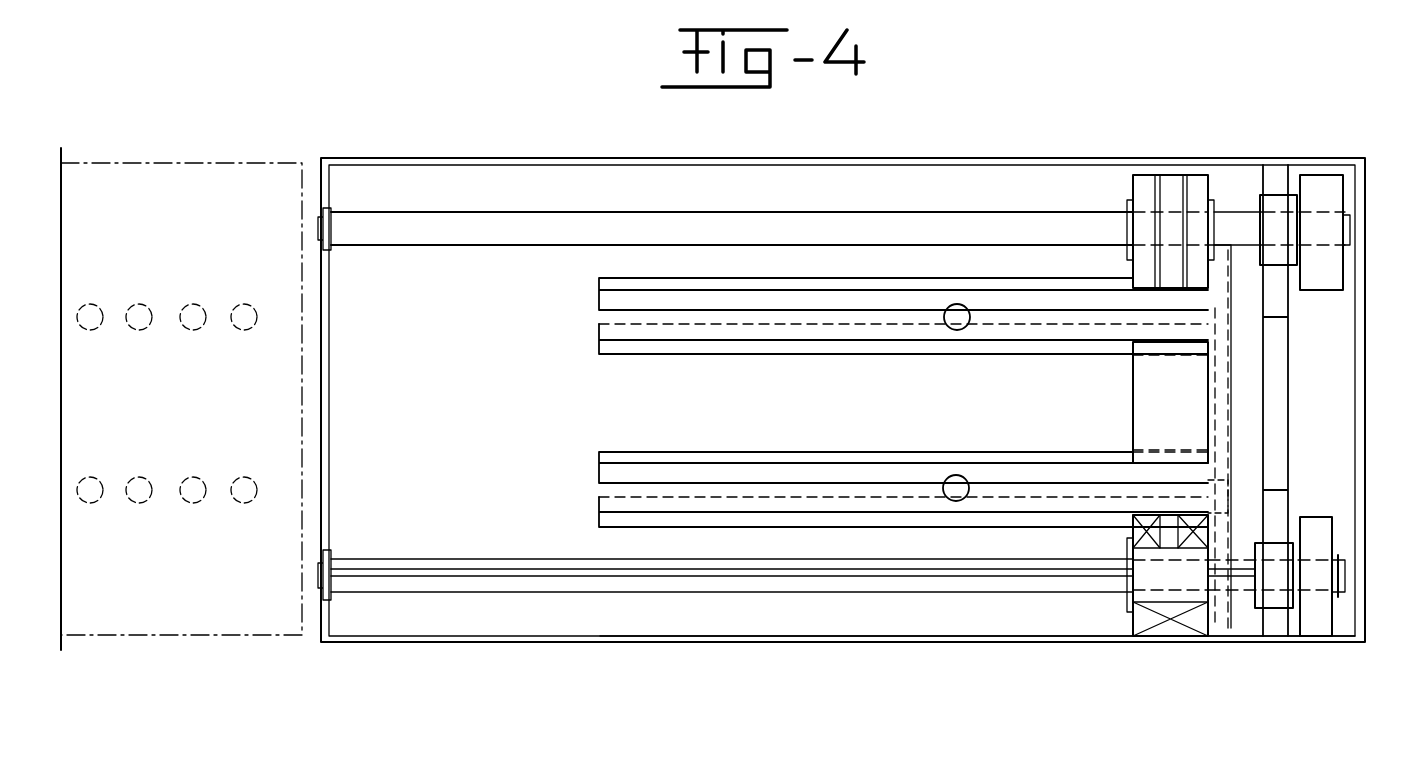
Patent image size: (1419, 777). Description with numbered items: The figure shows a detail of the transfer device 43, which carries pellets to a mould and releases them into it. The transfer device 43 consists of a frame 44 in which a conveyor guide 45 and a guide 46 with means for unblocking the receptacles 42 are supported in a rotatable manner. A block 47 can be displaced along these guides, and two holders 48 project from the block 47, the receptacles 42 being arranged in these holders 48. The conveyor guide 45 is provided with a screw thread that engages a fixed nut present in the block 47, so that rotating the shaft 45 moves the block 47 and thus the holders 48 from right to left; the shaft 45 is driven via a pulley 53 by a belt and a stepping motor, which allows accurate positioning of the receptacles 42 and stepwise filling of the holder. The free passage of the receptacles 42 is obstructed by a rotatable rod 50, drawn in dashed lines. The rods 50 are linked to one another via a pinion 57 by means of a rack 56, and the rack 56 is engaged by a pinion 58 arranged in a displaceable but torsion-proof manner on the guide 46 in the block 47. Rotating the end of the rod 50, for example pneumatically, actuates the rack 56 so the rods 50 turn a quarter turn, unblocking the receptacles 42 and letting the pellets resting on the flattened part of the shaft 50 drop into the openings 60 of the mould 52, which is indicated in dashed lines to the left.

The receptacles 42 is at (738, 318).
The transfer device 43 is at (464, 645).
The frame 44 is at (1005, 638).
The conveyor guide 45 is at (951, 212).
The guide 46 is at (813, 582).
The block 47 is at (1169, 188).
The holders 48 is at (640, 350).
The rotatable rod 50 is at (1113, 330).
The mould 52 is at (247, 641).
The pulley 53 is at (1345, 205).
The rack 56 is at (1225, 408).
The pinion 57 is at (1212, 438).
The pinion 58 is at (1214, 628).
The openings 60 is at (240, 322).